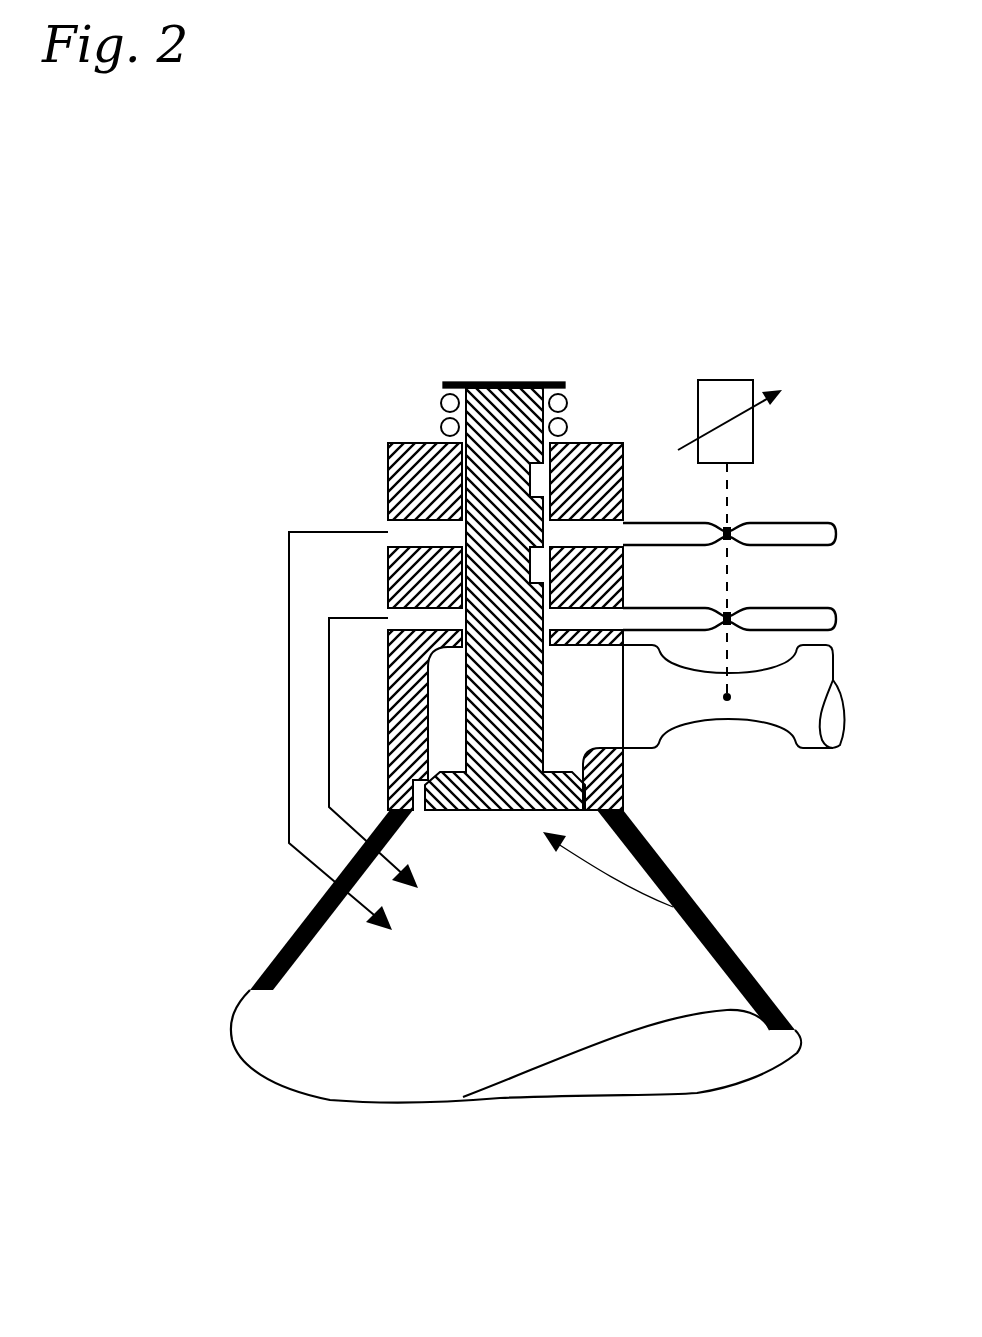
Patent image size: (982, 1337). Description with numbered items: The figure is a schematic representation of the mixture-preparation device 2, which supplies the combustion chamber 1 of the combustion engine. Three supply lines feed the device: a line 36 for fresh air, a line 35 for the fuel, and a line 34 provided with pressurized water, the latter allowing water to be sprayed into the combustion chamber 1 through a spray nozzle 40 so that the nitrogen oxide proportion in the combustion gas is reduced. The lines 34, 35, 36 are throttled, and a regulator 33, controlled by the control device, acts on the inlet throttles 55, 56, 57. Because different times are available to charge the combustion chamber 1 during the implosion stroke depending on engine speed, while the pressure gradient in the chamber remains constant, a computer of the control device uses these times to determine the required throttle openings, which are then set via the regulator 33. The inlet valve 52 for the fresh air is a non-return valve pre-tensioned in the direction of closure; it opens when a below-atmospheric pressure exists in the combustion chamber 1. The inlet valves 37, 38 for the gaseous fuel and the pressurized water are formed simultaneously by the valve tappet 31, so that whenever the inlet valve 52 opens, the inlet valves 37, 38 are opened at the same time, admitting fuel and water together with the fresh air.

The combustion chamber 1 is at (375, 1052).
The mixture-preparation device 2 is at (635, 418).
The valve tappet 31 is at (498, 417).
The regulator 33 is at (727, 400).
The line provided with pressurized water 34 is at (813, 533).
The line for the fuel 35 is at (807, 616).
The line for fresh air 36 is at (807, 722).
The inlet valve for the gaseous fuel 37 is at (470, 566).
The inlet valve for the pressurized water 38 is at (470, 483).
The spray nozzle 40 is at (383, 932).
The inlet valve for the fresh air 52 is at (710, 908).
The inlet throttle 55 is at (727, 530).
The inlet throttle 56 is at (727, 617).
The inlet throttle 57 is at (727, 697).